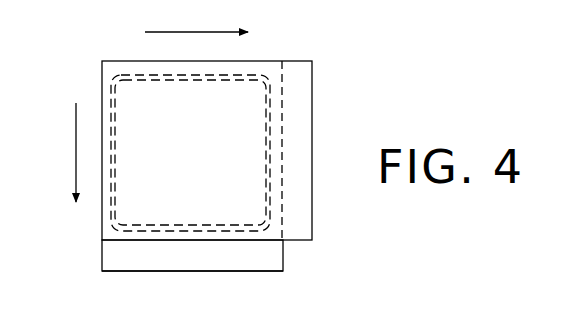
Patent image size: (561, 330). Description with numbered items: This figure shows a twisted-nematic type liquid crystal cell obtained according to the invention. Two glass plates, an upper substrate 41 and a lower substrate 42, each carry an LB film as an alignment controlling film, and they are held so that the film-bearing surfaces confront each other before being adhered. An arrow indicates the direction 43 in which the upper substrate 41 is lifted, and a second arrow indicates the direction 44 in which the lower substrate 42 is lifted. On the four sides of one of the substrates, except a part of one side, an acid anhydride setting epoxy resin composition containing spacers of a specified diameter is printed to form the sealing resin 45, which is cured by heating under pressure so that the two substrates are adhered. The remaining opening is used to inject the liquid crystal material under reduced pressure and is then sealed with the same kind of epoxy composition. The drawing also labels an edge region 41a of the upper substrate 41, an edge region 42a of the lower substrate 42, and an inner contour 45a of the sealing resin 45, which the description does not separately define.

The upper substrate 41 is at (314, 124).
The edge portion of plate 41a is at (296, 163).
The lower substrate 42 is at (195, 273).
The edge of strip 42a is at (137, 263).
The direction in which the upper substrate is lifted 43 is at (272, 31).
The direction in which the lower substrate is lifted 44 is at (74, 194).
The sealing resin 45 is at (270, 98).
The inner dashed contour 45a is at (109, 162).